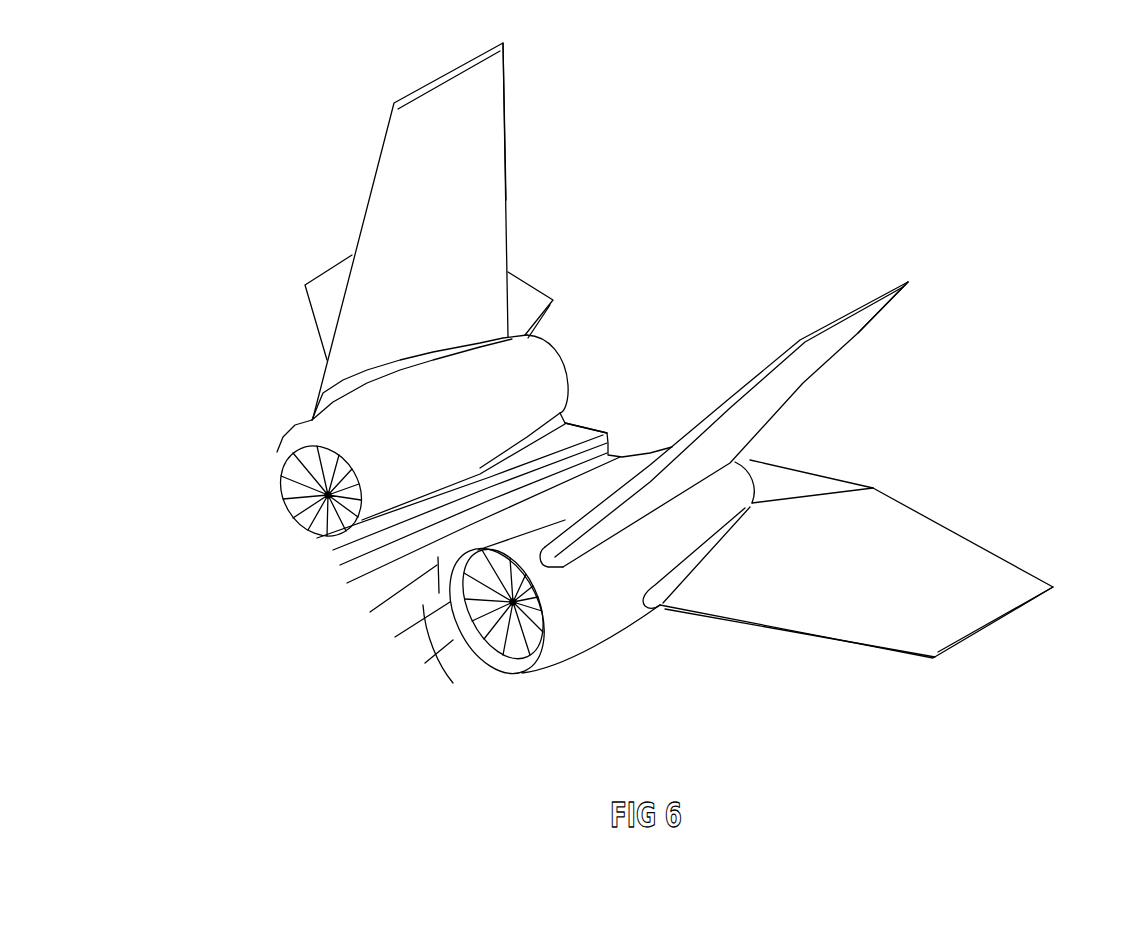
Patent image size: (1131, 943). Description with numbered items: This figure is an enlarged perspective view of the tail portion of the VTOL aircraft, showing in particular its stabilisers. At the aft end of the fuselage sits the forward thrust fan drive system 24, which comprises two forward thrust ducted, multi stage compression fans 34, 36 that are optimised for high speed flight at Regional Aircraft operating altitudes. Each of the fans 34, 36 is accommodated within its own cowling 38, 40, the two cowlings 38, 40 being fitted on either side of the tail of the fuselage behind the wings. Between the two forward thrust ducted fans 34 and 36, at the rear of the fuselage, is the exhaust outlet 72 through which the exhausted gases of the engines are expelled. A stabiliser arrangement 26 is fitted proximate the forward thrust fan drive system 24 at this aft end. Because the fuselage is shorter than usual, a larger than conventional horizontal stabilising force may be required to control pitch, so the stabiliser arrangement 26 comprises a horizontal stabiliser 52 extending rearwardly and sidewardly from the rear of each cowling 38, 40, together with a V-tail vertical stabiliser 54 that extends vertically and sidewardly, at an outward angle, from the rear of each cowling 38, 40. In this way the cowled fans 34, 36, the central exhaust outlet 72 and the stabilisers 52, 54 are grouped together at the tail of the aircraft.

The forward thrust fan drive system 24 is at (290, 478).
The stabiliser arrangement 26 is at (703, 350).
The forward thrust ducted multi stage compression fan 34 is at (315, 502).
The forward thrust ducted multi stage compression fan 36 is at (528, 610).
The cowling 38 is at (558, 383).
The cowling 40 is at (743, 483).
The horizontal stabiliser 52 is at (323, 280).
The V-tail vertical stabiliser 54 is at (498, 172).
The exhaust outlet 72 is at (618, 417).